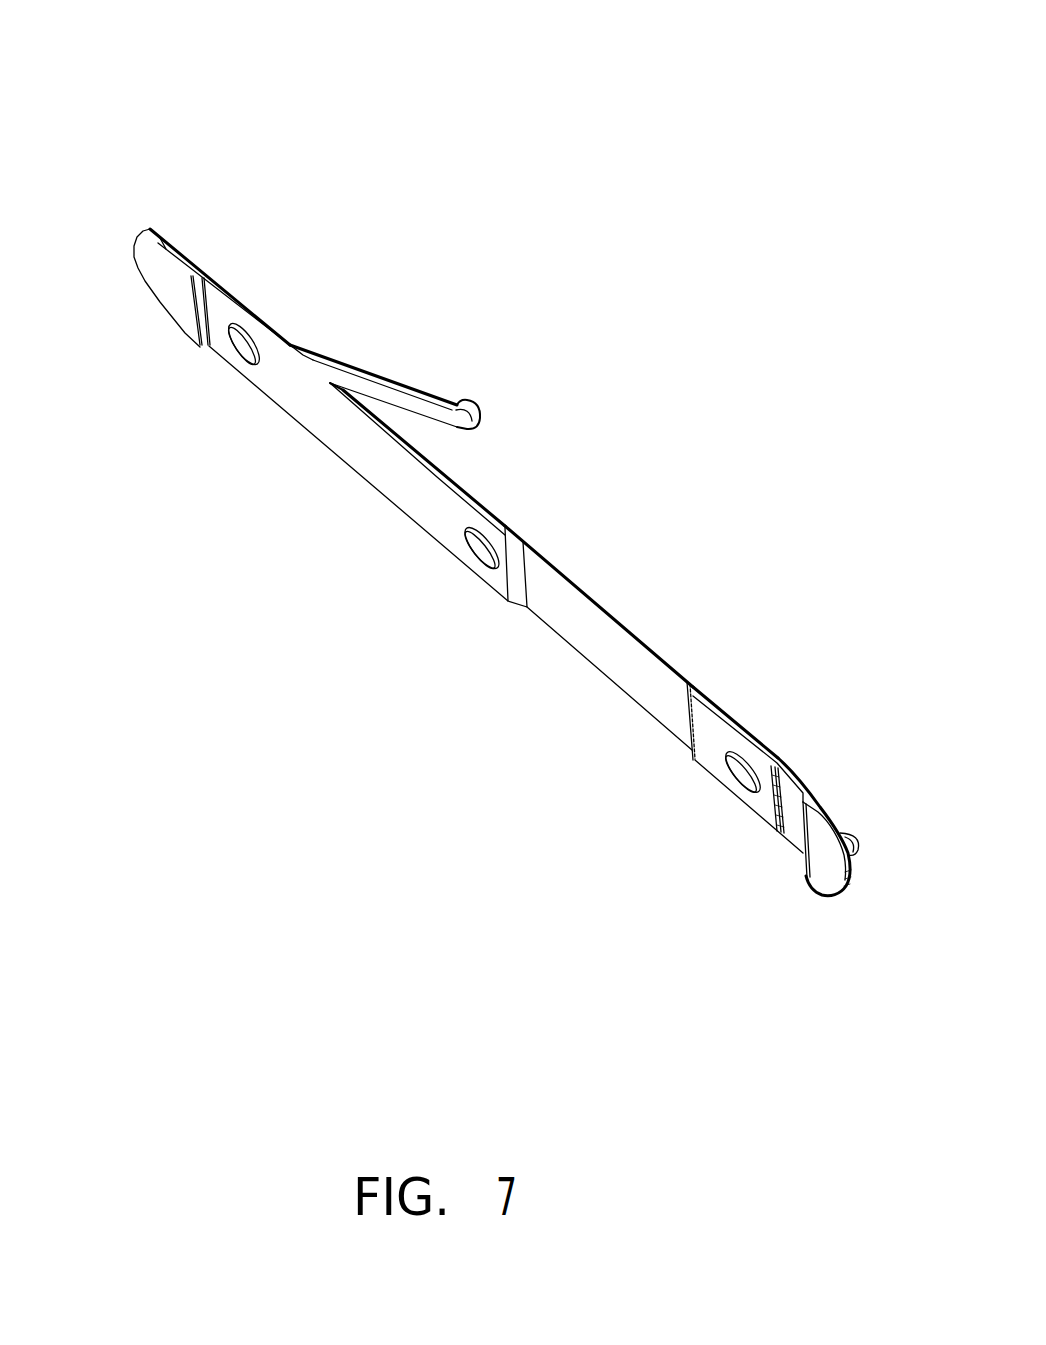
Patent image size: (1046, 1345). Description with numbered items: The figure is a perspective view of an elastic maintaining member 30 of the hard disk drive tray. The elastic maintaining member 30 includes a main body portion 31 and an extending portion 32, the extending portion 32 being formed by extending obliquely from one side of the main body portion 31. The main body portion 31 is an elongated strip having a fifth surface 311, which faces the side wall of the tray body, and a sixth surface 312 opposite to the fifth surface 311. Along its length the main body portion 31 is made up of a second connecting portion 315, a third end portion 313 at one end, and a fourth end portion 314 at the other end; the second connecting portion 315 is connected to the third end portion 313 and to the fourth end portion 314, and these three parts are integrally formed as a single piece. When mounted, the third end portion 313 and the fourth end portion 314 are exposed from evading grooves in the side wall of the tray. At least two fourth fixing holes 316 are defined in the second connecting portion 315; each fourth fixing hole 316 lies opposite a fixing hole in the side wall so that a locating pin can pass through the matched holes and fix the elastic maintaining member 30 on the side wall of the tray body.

The elastic maintaining member 30 is at (504, 495).
The main body portion 31 is at (504, 548).
The extending portion 32 is at (412, 402).
The fifth surface 311 is at (287, 380).
The sixth surface 312 is at (470, 470).
The third end portion 313 is at (162, 270).
The fourth end portion 314 is at (815, 862).
The second connecting portion 315 is at (625, 657).
The fourth fixing hole 316 is at (488, 545).